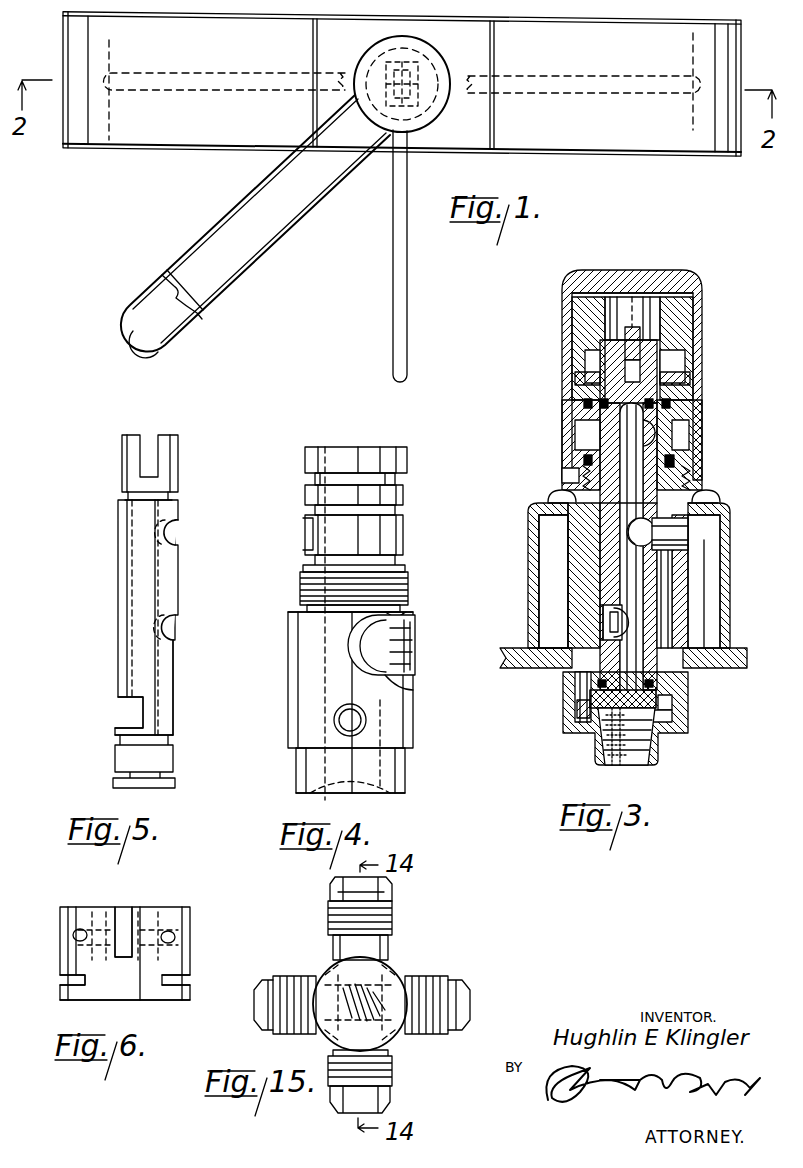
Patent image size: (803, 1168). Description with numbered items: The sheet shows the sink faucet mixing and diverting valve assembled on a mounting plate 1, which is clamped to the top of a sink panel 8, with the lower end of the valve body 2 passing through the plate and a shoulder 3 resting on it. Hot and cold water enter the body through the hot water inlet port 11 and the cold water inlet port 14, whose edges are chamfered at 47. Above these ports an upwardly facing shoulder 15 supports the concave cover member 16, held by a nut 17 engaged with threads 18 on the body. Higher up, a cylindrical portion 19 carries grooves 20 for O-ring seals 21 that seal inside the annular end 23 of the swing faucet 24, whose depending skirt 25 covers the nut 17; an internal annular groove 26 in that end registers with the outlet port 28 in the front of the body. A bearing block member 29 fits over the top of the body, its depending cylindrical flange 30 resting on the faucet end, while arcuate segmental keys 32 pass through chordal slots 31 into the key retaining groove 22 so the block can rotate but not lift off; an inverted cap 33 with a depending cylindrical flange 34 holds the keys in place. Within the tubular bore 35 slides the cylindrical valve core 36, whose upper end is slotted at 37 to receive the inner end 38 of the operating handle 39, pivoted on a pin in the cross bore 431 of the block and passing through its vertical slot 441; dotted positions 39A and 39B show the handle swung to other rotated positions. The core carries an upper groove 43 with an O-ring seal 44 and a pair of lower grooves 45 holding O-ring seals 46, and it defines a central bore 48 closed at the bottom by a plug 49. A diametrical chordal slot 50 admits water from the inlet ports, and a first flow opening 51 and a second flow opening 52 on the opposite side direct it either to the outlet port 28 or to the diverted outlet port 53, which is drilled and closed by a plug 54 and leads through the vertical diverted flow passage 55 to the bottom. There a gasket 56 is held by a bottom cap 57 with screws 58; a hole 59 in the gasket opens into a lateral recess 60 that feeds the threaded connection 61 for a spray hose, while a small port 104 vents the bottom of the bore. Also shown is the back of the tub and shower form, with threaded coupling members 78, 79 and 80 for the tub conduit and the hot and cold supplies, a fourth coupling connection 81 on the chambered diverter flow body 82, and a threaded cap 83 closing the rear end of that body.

In FIG. 3, the mounting plate 1 is at (704, 648).
In FIG. 3, the valve body 2 is at (692, 622).
In FIG. 4, the valve body 2 is at (293, 688).
In FIG. 4, the shoulder 3 is at (293, 750).
In FIG. 3, the sink panel 8 is at (506, 664).
In FIG. 3, the hot water inlet port 11 is at (608, 627).
In FIG. 4, the cold water inlet port 14 is at (340, 722).
In FIG. 3, the upwardly facing shoulder 15 is at (580, 530).
In FIG. 4, the upwardly facing shoulder 15 is at (400, 618).
In FIG. 1, the cover member 16 is at (608, 142).
In FIG. 3, the cover member 16 is at (730, 598).
In FIG. 3, the nut 17 is at (552, 500).
In FIG. 3, the threads 18 is at (552, 493).
In FIG. 4, the threads 18 is at (302, 590).
In FIG. 3, the cylindrical portion 19 is at (692, 447).
In FIG. 4, the grooves 20 is at (398, 568).
In FIG. 3, the O-ring seals 21 is at (695, 468).
In FIG. 4, the key retaining groove 22 is at (305, 480).
In FIG. 3, the annular end 23 is at (562, 433).
In FIG. 1, the swing faucet 24 is at (268, 195).
In FIG. 3, the depending skirt 25 is at (566, 478).
In FIG. 3, the internal annular groove 26 is at (686, 437).
In FIG. 3, the outlet port 28 is at (586, 443).
In FIG. 4, the outlet port 28 is at (312, 548).
In FIG. 3, the bearing block member 29 is at (690, 320).
In FIG. 6, the bearing block member 29 is at (190, 938).
In FIG. 3, the depending cylindrical flange 30 is at (688, 367).
In FIG. 6, the depending cylindrical flange 30 is at (190, 994).
In FIG. 3, the chordal slots 31 is at (575, 370).
In FIG. 6, the chordal slots 31 is at (190, 978).
In FIG. 3, the arcuate segmental keys 32 is at (575, 381).
In FIG. 1, the cap 33 is at (436, 110).
In FIG. 3, the cap 33 is at (660, 282).
In FIG. 3, the depending cylindrical flange 34 is at (562, 325).
In FIG. 3, the tubular bore 35 is at (598, 555).
In FIG. 4, the tubular bore 35 is at (290, 642).
In FIG. 3, the valve core 36 is at (612, 572).
In FIG. 5, the valve core 36 is at (118, 590).
In FIG. 3, the slot 37 is at (660, 360).
In FIG. 5, the slot 37 is at (137, 470).
In FIG. 3, the inner end 38 is at (640, 332).
In FIG. 1, the operating handle 39 is at (406, 272).
In FIG. 1, the rotated handle position 39A is at (206, 90).
In FIG. 1, the rotated handle position 39B is at (667, 97).
In FIG. 5, the upper external annular groove 43 is at (166, 500).
In FIG. 3, the O-ring seal 44 is at (590, 405).
In FIG. 5, the annular grooves 45 is at (165, 780).
In FIG. 3, the O-ring seals 46 is at (660, 650).
In FIG. 3, the chamfer 47 is at (612, 618).
In FIG. 3, the central cylindrical bore 48 is at (632, 500).
In FIG. 5, the central cylindrical bore 48 is at (172, 672).
In FIG. 3, the plug 49 is at (600, 683).
In FIG. 3, the diametrical chordal slot 50 is at (606, 640).
In FIG. 5, the diametrical chordal slot 50 is at (130, 700).
In FIG. 3, the first flow opening 51 is at (655, 430).
In FIG. 5, the first flow opening 51 is at (172, 535).
In FIG. 3, the second flow opening 52 is at (660, 548).
In FIG. 5, the second flow opening 52 is at (170, 628).
In FIG. 3, the diverted outlet port 53 is at (668, 536).
In FIG. 4, the diverted outlet port 53 is at (392, 640).
In FIG. 3, the plug 54 is at (662, 528).
In FIG. 4, the plug 54 is at (388, 626).
In FIG. 3, the diverted flow passage 55 is at (670, 585).
In FIG. 4, the diverted flow passage 55 is at (394, 656).
In FIG. 3, the gasket 56 is at (582, 710).
In FIG. 3, the bottom cap 57 is at (668, 735).
In FIG. 3, the screws 58 is at (584, 724).
In FIG. 3, the hole 59 is at (672, 703).
In FIG. 3, the lateral recess 60 is at (664, 718).
In FIG. 3, the threaded connection 61 is at (624, 748).
In FIG. 15, the coupling member 78 is at (388, 1075).
In FIG. 15, the coupling member 79 is at (440, 980).
In FIG. 15, the coupling member 80 is at (295, 978).
In FIG. 15, the coupling connection 81 is at (392, 915).
In FIG. 15, the diverter flow body 82 is at (372, 948).
In FIG. 15, the threaded cap 83 is at (325, 1038).
In FIG. 4, the small port 104 is at (335, 802).
In FIG. 6, the cross bore 431 is at (103, 925).
In FIG. 6, the vertical slot 441 is at (120, 920).